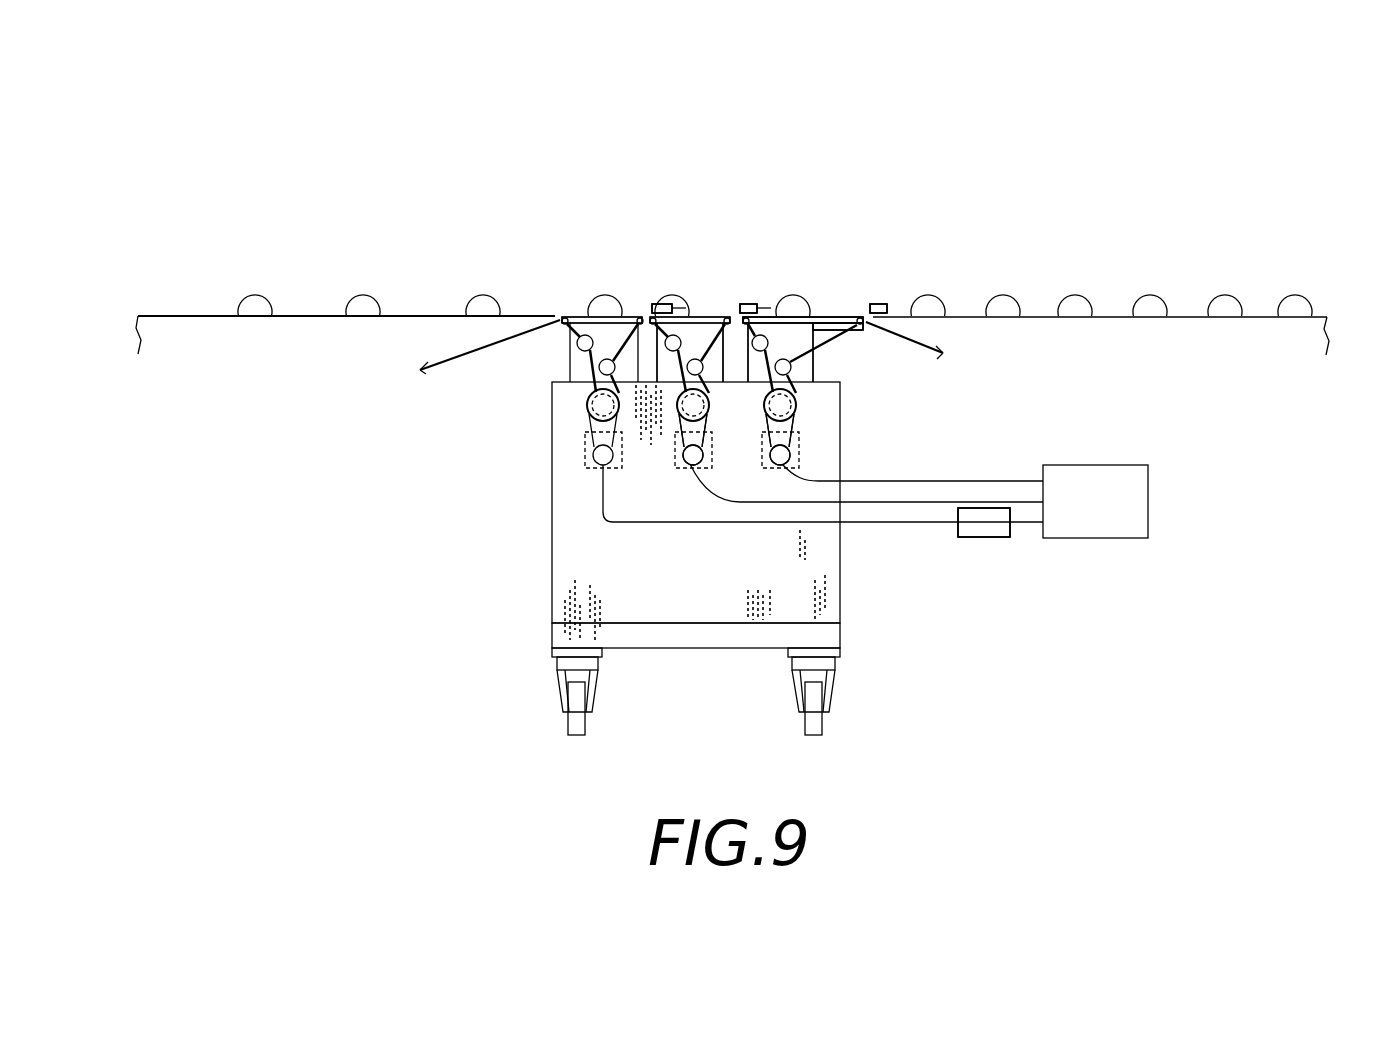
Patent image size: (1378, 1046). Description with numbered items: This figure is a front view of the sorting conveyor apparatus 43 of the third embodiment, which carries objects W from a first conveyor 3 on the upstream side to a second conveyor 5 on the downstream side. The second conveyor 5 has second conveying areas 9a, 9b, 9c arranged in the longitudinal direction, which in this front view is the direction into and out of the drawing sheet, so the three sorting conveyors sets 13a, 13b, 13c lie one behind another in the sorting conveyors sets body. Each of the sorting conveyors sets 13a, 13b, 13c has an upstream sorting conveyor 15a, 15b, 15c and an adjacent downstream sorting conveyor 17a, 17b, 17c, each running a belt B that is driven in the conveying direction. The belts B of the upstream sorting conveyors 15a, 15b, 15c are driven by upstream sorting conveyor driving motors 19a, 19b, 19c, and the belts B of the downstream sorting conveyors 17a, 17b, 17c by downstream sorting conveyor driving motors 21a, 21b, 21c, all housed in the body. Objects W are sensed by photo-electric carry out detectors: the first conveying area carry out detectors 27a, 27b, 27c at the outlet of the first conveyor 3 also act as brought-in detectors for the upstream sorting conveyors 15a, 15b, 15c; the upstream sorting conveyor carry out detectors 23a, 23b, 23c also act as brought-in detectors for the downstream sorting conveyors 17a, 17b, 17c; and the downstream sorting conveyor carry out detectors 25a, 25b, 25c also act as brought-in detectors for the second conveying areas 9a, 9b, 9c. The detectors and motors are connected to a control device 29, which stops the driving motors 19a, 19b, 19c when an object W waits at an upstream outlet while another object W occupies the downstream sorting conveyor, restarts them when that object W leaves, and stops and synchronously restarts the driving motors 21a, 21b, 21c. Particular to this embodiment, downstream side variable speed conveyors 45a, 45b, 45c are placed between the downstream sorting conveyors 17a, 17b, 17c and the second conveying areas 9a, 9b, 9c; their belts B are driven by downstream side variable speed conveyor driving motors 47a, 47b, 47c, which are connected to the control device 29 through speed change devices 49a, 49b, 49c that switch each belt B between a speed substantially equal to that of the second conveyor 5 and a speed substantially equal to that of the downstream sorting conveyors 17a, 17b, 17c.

The first conveyor 3 is at (1130, 225).
The second conveyor 5 is at (240, 195).
The second conveying area 9a is at (307, 308).
The second conveying area 9b is at (346, 246).
The second conveying area 9c is at (346, 246).
The sorting conveyors set 13a is at (823, 153).
The sorting conveyors set 13b is at (756, 248).
The sorting conveyors set 13c is at (761, 248).
The upstream sorting conveyor 15a is at (838, 310).
The upstream sorting conveyor 15b is at (957, 259).
The upstream sorting conveyor 15c is at (957, 259).
The downstream sorting conveyor 17a is at (713, 310).
The downstream sorting conveyor 17b is at (676, 237).
The downstream sorting conveyor 17c is at (733, 237).
The upstream sorting conveyor driving motor 19a is at (780, 456).
The upstream sorting conveyor driving motor 19b is at (869, 436).
The upstream sorting conveyor driving motor 19c is at (824, 436).
The downstream sorting conveyor driving motor 21a is at (688, 462).
The downstream sorting conveyor driving motor 21b is at (679, 503).
The downstream sorting conveyor driving motor 21c is at (689, 503).
The upstream sorting conveyor carry out detector 23a is at (752, 303).
The upstream sorting conveyor carry out detector 23b is at (916, 227).
The upstream sorting conveyor carry out detector 23c is at (916, 227).
The downstream sorting conveyor carry out detector 25a is at (656, 305).
The downstream sorting conveyor carry out detector 25b is at (601, 253).
The downstream sorting conveyor carry out detector 25c is at (601, 253).
The first conveying area carry out detector 27a is at (882, 304).
The first conveying area carry out detector 27b is at (994, 276).
The first conveying area carry out detector 27c is at (994, 276).
The control device 29 is at (1100, 538).
The sorting conveyor apparatus 43 is at (890, 125).
The downstream side variable speed conveyor 45a is at (573, 312).
The downstream side variable speed conveyor 45b is at (568, 277).
The downstream side variable speed conveyor 45c is at (635, 277).
The downstream side variable speed conveyor driving motor 47a is at (598, 455).
The downstream side variable speed conveyor driving motor 47b is at (504, 474).
The downstream side variable speed conveyor driving motor 47c is at (547, 474).
The speed change device 49a is at (975, 538).
The speed change device 49b is at (991, 574).
The speed change device 49c is at (991, 574).
The belt B is at (565, 326).
The object to be conveyed W is at (250, 298).